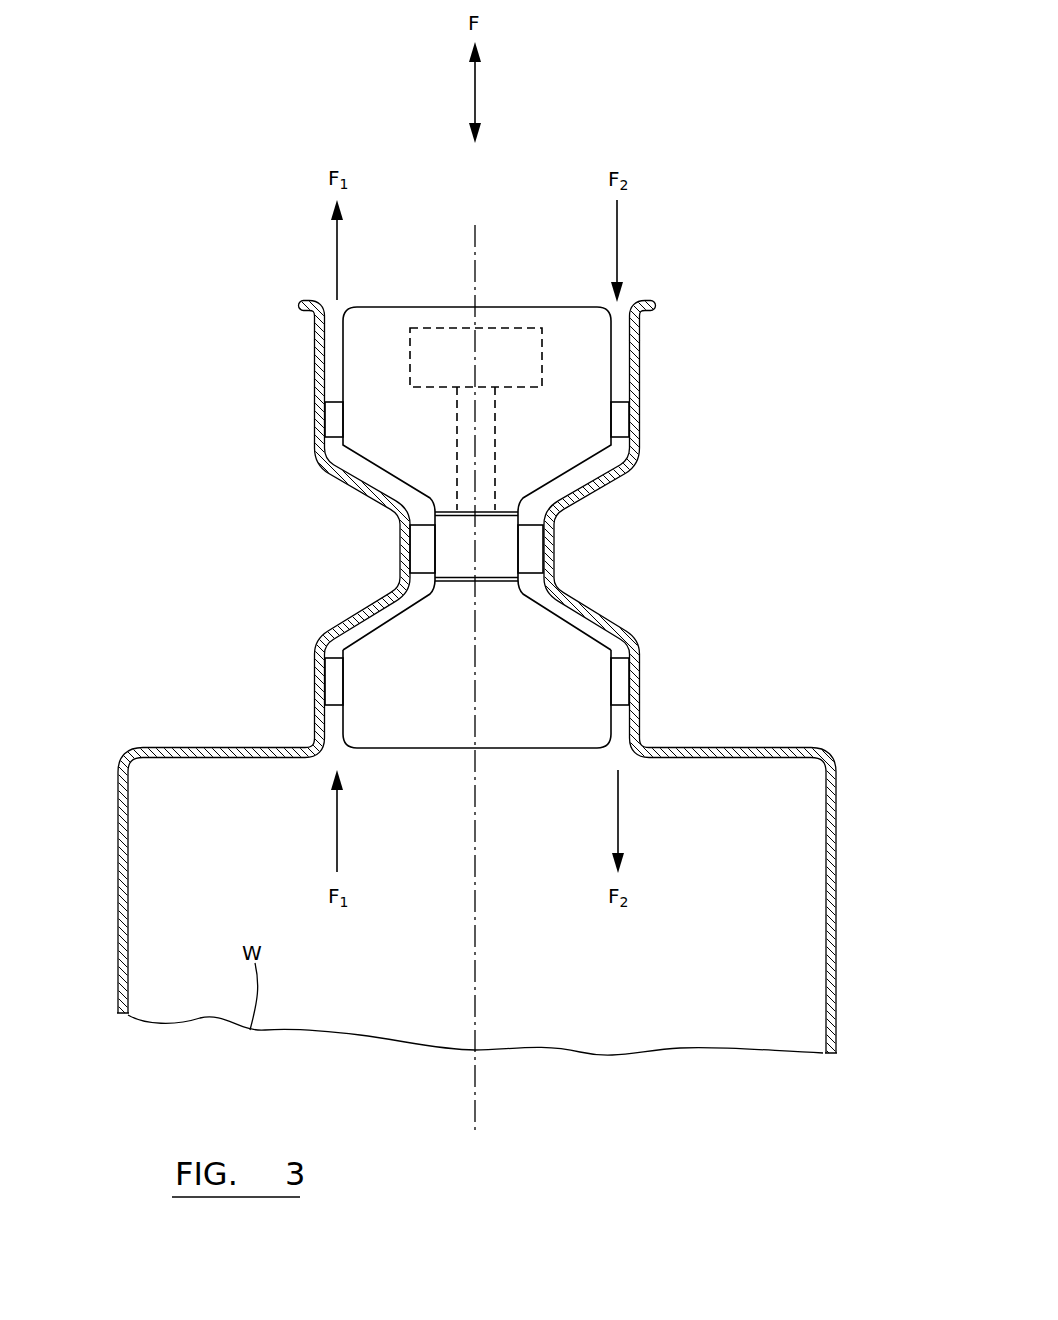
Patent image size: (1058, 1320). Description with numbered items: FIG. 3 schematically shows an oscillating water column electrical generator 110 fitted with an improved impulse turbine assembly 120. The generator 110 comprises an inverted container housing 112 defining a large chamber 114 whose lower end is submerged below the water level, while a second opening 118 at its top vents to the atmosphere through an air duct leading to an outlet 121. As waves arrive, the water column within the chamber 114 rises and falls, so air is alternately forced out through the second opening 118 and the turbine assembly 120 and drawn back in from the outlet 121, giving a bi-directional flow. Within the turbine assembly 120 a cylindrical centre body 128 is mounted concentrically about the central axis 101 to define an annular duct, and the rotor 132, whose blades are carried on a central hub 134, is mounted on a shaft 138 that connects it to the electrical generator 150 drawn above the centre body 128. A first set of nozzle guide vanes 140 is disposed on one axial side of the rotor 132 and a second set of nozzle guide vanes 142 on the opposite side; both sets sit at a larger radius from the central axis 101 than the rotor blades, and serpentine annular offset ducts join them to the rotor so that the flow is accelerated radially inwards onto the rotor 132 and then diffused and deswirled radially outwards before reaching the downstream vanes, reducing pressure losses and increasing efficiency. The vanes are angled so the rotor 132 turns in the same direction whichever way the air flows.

The central axis 101 is at (476, 265).
The oscillating water column electrical generator 110 is at (432, 639).
The inverted container housing 112 is at (118, 980).
The chamber 114 is at (750, 945).
The second opening 118 is at (628, 765).
The turbine assembly 120 is at (323, 566).
The outlet 121 is at (633, 290).
The centre body 128 is at (540, 750).
The rotor 132 is at (532, 549).
The central hub 134 is at (453, 526).
The shaft 138 is at (497, 452).
The first set of nozzle guide vanes 140 is at (624, 682).
The second set of nozzle guide vanes 142 is at (620, 425).
The electrical generator 150 is at (542, 355).